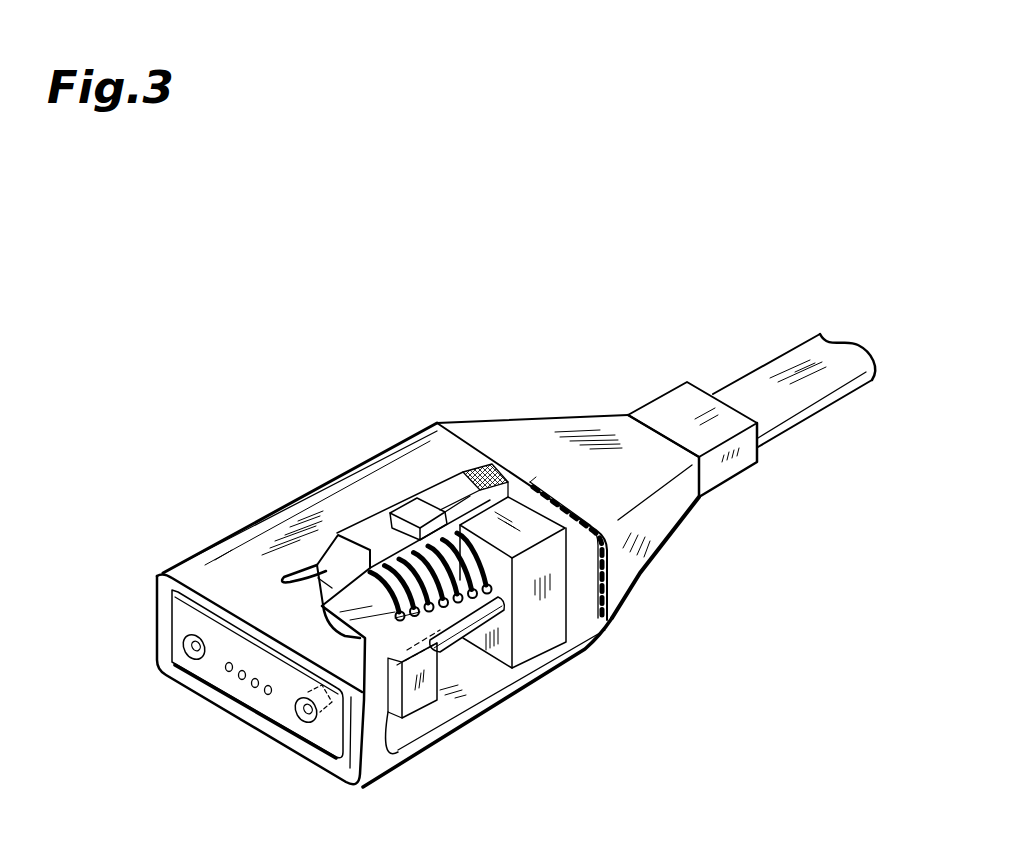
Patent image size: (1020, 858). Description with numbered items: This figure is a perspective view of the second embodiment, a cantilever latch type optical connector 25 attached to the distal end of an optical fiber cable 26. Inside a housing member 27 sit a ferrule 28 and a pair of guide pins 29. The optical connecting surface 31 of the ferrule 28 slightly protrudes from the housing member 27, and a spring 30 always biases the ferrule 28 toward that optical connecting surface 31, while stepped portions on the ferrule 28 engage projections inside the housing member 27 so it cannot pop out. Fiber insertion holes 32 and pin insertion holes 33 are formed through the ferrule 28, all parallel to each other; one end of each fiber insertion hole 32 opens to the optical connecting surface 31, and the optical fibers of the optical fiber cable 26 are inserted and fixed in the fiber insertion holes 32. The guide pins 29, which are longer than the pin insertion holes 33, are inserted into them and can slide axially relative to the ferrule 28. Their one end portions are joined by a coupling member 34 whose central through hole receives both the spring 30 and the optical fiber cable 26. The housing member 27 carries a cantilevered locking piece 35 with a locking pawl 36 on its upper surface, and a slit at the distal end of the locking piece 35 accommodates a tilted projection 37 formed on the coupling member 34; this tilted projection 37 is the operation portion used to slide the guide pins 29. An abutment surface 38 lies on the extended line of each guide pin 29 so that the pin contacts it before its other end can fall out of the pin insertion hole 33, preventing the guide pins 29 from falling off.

The optical connector 25 is at (266, 407).
The optical fiber cable 26 is at (797, 402).
The housing member 27 is at (388, 470).
The ferrule 28 is at (421, 707).
The guide pins 29 is at (453, 643).
The spring 30 is at (477, 588).
The optical connecting surface 31 is at (277, 710).
The fiber insertion holes 32 is at (230, 668).
The pin insertion holes 33 is at (181, 648).
The coupling member 34 is at (547, 623).
The locking piece 35 is at (382, 540).
The locking pawl 36 is at (316, 563).
The tilted projection 37 is at (481, 462).
The abutment surface 38 is at (588, 598).